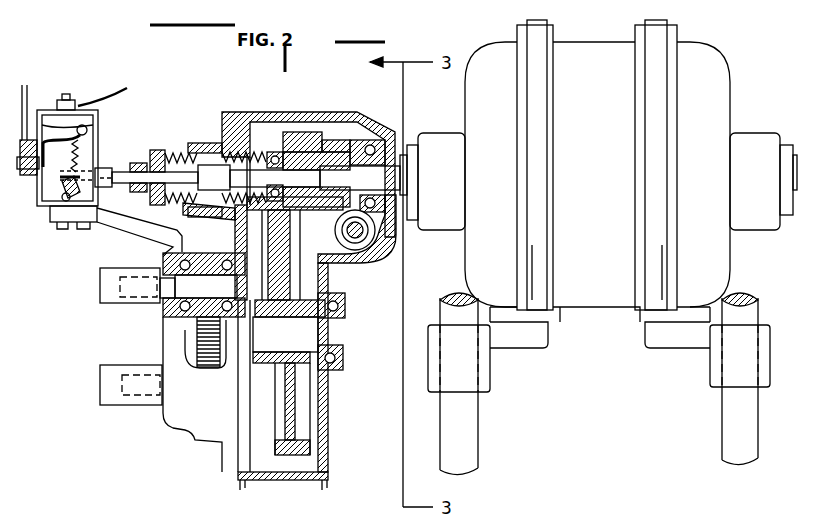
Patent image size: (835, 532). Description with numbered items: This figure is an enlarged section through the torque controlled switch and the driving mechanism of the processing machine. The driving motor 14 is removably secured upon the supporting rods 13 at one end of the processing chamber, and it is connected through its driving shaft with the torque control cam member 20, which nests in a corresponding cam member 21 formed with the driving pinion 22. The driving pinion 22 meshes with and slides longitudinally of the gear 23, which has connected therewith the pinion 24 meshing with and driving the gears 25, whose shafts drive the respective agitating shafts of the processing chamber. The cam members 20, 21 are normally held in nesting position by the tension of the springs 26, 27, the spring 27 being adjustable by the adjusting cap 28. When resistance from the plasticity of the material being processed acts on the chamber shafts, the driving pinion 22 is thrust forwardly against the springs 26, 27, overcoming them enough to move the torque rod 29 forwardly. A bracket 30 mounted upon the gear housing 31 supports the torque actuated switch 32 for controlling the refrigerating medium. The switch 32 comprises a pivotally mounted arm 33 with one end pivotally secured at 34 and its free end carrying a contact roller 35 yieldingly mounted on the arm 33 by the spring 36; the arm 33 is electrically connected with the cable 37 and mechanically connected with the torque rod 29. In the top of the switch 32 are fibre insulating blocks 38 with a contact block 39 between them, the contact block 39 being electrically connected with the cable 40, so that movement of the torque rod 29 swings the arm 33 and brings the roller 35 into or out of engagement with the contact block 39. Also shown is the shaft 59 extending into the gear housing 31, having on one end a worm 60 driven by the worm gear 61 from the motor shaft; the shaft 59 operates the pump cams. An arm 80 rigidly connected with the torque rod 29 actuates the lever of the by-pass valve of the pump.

The supporting rods 13 is at (452, 426).
The driving motor 14 is at (721, 104).
The torque control cam member 20 is at (353, 138).
The cam member 21 is at (330, 140).
The driving pinion 22 is at (303, 131).
The gear 23 is at (292, 289).
The pinion 24 is at (210, 320).
The gears 25 is at (200, 257).
The spring 26 is at (217, 150).
The spring 27 is at (170, 150).
The adjusting cap 28 is at (151, 152).
The torque rod 29 is at (124, 172).
The bracket 30 is at (108, 218).
The gear housing 31 is at (265, 112).
The torque actuated switch 32 is at (40, 110).
The pivotally mounted arm 33 is at (50, 176).
The pivot 34 is at (50, 208).
The contact roller 35 is at (23, 137).
The spring 36 is at (65, 156).
The cable 37 is at (23, 85).
The fibre insulating blocks 38 is at (50, 113).
The contact block 39 is at (82, 124).
The cable 40 is at (128, 88).
The shaft 59 is at (366, 243).
The worm 60 is at (357, 240).
The worm gear 61 is at (373, 213).
The arm 80 is at (138, 193).